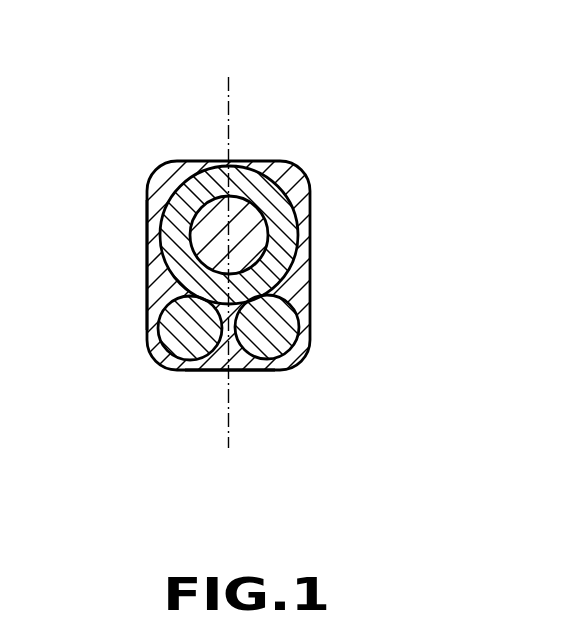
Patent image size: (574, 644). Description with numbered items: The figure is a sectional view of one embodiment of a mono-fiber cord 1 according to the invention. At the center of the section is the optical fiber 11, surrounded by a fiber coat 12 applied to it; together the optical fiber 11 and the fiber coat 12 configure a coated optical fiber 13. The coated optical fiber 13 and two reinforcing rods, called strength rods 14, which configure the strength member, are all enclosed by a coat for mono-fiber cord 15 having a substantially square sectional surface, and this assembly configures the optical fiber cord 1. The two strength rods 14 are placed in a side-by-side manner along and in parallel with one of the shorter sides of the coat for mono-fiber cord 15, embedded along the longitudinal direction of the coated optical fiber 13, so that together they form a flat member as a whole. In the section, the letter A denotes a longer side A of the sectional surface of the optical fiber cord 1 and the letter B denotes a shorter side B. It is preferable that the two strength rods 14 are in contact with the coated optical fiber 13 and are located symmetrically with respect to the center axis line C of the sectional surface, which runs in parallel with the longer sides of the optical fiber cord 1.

The mono-fiber cord 1 is at (258, 220).
The optical fiber 11 is at (250, 218).
The fiber coat 12 is at (283, 240).
The coated optical fiber 13 is at (239, 225).
The strength rods 14 is at (282, 338).
The coat for mono-fiber cord 15 is at (298, 283).
The longer side A is at (257, 372).
The shorter side B is at (150, 279).
The center axis line C is at (231, 107).